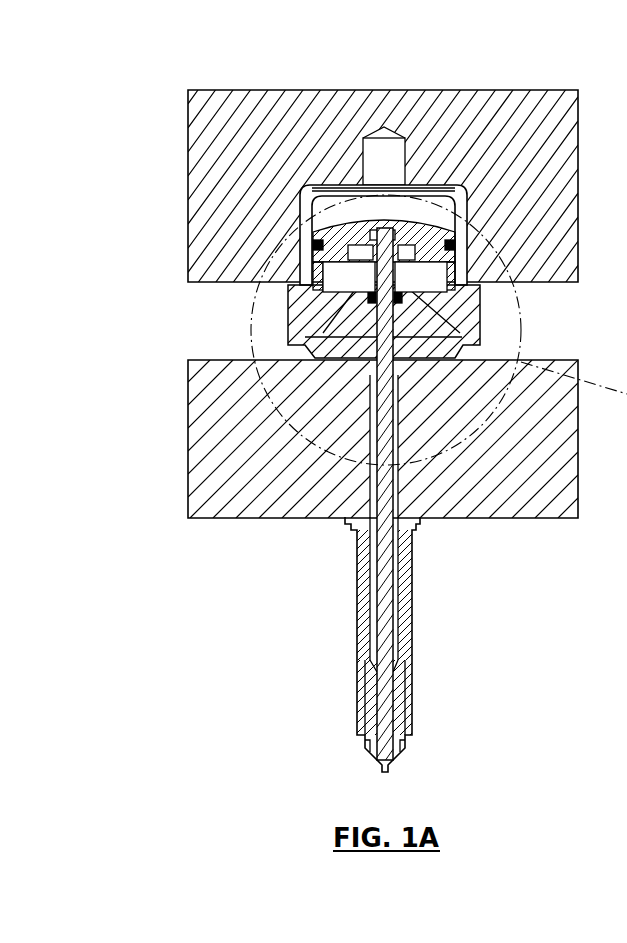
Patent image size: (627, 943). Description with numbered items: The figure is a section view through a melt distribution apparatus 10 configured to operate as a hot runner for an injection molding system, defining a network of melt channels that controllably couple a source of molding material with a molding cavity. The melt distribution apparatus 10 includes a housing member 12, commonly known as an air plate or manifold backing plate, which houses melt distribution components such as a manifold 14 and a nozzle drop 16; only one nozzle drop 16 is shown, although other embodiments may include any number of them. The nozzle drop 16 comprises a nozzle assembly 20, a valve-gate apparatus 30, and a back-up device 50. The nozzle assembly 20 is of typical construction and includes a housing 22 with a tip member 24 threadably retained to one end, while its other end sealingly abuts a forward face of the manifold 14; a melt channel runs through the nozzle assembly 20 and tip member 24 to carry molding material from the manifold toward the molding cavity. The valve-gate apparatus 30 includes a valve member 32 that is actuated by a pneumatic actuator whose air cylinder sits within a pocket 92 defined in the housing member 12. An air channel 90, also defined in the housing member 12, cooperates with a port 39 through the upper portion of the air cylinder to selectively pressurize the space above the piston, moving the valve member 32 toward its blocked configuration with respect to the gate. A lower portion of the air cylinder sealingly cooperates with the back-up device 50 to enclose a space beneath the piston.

The melt distribution apparatus 10 is at (497, 71).
The housing member 12 is at (410, 107).
The manifold 14 is at (470, 510).
The nozzle drop 16 is at (162, 287).
The nozzle assembly 20 is at (332, 582).
The housing 22 is at (410, 582).
The tip member 24 is at (412, 727).
The valve-gate apparatus 30 is at (300, 268).
The valve member 32 is at (394, 605).
The port 39 is at (407, 185).
The back-up device 50 is at (268, 330).
The air channel 90 is at (397, 174).
The pocket 92 is at (470, 200).